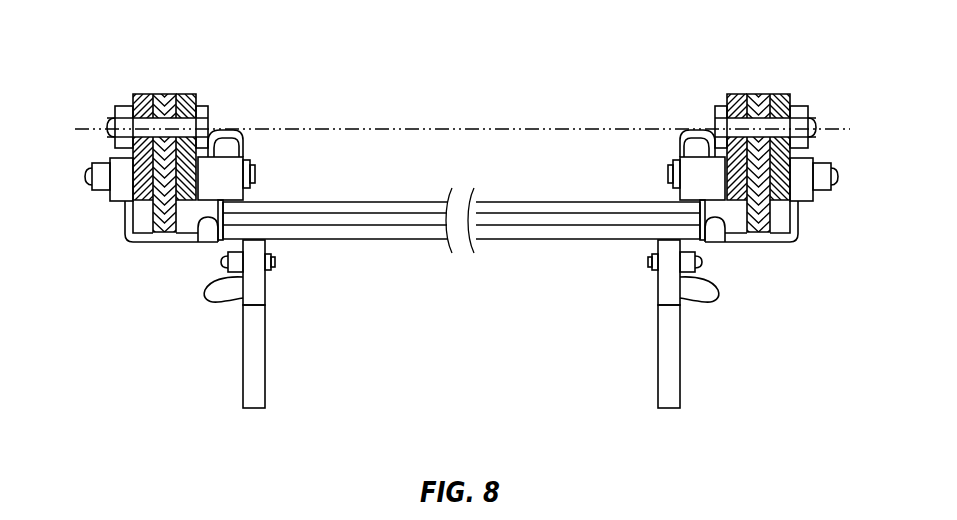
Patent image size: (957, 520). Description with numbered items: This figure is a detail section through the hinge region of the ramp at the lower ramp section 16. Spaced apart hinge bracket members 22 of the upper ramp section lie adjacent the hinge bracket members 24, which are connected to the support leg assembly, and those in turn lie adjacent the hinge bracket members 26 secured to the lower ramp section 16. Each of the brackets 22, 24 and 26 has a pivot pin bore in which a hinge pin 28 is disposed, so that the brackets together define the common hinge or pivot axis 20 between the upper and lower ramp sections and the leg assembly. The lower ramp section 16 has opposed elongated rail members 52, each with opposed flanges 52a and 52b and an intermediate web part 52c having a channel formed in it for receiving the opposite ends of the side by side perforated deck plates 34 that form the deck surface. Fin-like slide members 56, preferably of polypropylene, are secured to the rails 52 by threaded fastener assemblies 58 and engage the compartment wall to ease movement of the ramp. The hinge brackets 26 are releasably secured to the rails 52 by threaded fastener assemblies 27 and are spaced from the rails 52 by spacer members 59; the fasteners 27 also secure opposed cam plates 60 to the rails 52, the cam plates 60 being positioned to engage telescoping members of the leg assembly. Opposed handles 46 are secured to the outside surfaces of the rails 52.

The lower ramp section 16 is at (497, 166).
The hinge axis 20 is at (426, 127).
The hinge bracket member 22 is at (186, 93).
The hinge bracket member 24 is at (166, 93).
The hinge bracket member 26 is at (143, 93).
The threaded fastener assembly 27 is at (92, 165).
The hinge pin 28 is at (148, 128).
The deck plate 34 is at (334, 202).
The handle 46 is at (145, 243).
The rail member 52 is at (248, 280).
The flange 52a is at (227, 138).
The flange 52b is at (207, 300).
The web part 52c is at (198, 224).
The slide member 56 is at (266, 385).
The threaded fastener assembly 58 is at (273, 254).
The spacer member 59 is at (228, 168).
The cam plate 60 is at (120, 205).